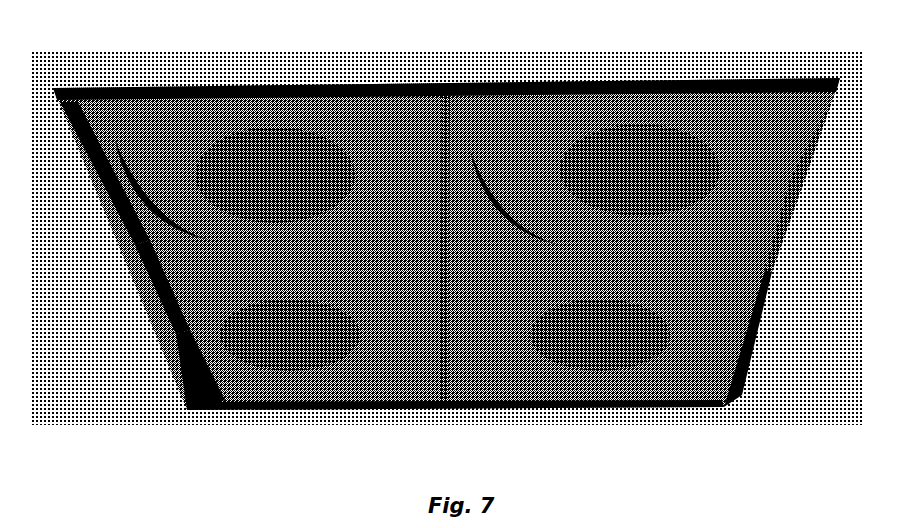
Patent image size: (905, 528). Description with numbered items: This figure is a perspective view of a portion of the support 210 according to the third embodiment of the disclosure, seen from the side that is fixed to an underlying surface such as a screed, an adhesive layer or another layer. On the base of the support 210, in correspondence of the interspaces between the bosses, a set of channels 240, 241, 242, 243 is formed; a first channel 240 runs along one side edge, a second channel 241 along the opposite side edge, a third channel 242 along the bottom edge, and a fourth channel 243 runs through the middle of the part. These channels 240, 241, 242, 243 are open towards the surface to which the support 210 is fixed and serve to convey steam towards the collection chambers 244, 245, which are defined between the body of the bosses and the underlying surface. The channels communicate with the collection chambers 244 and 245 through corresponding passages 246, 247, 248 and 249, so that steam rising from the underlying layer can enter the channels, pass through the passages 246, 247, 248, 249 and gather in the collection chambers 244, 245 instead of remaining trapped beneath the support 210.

The support 210 is at (103, 60).
The channel 240 is at (143, 285).
The channel 241 is at (767, 275).
The channel 242 is at (456, 415).
The channel 243 is at (448, 88).
The collection chamber 244 is at (110, 192).
The collection chamber 245 is at (797, 188).
The passage 246 is at (170, 353).
The passage 247 is at (745, 343).
The passage 248 is at (243, 103).
The passage 249 is at (633, 98).